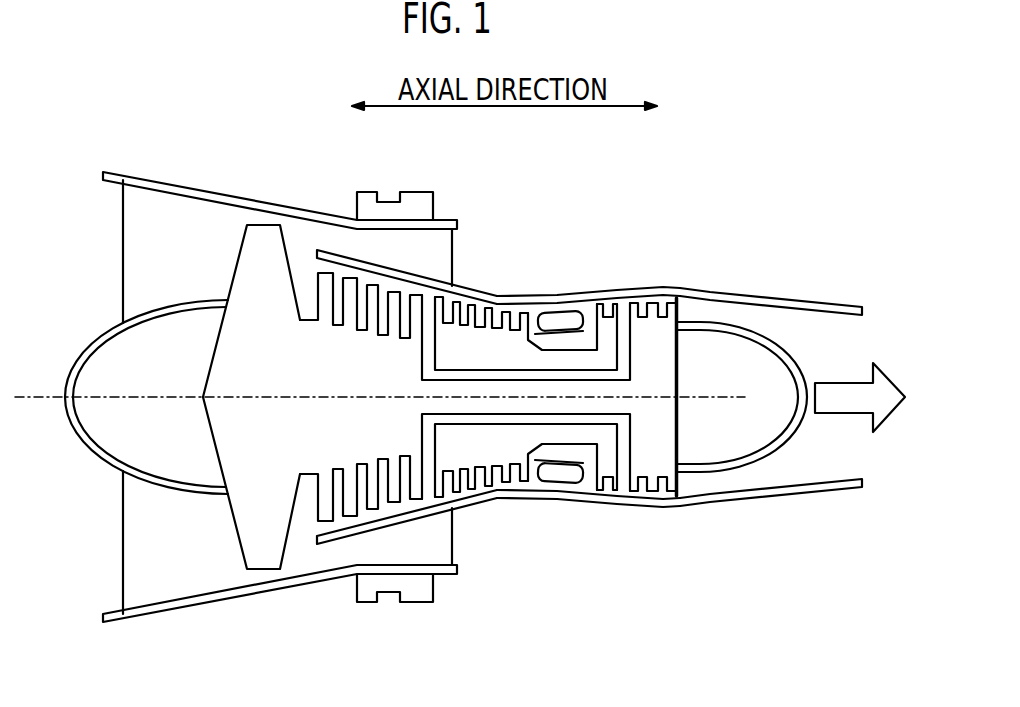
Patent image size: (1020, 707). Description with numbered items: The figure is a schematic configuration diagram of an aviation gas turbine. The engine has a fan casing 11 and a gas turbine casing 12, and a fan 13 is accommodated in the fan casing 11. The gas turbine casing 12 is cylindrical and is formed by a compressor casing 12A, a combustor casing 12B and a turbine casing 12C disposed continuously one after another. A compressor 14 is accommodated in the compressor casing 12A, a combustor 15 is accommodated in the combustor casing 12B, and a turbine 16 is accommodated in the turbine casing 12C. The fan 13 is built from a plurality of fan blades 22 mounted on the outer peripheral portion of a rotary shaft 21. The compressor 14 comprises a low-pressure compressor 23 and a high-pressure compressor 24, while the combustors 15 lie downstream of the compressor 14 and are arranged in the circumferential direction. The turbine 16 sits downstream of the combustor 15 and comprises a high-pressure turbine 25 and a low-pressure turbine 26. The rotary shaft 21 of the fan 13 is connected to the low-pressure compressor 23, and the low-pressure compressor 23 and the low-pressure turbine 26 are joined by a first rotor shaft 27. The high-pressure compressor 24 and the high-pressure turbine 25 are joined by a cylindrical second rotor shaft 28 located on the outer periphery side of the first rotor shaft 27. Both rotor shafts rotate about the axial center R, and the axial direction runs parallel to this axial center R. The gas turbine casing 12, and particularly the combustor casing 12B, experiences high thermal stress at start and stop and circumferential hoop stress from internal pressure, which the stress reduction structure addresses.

The fan casing 11 is at (158, 612).
The gas turbine casing 12 is at (589, 394).
The compressor casing 12A is at (437, 278).
The combustor casing 12B is at (609, 288).
The turbine casing 12C is at (770, 292).
The fan 13 is at (168, 405).
The compressor 14 is at (380, 383).
The combustor 15 is at (555, 306).
The turbine 16 is at (662, 289).
The rotary shaft 21 is at (238, 423).
The fan blade 22 is at (228, 284).
The low-pressure compressor 23 is at (352, 442).
The high-pressure compressor 24 is at (498, 440).
The high-pressure turbine 25 is at (600, 457).
The low-pressure turbine 26 is at (655, 448).
The first rotor shaft 27 is at (528, 403).
The second rotor shaft 28 is at (565, 433).
The axial center R is at (27, 395).